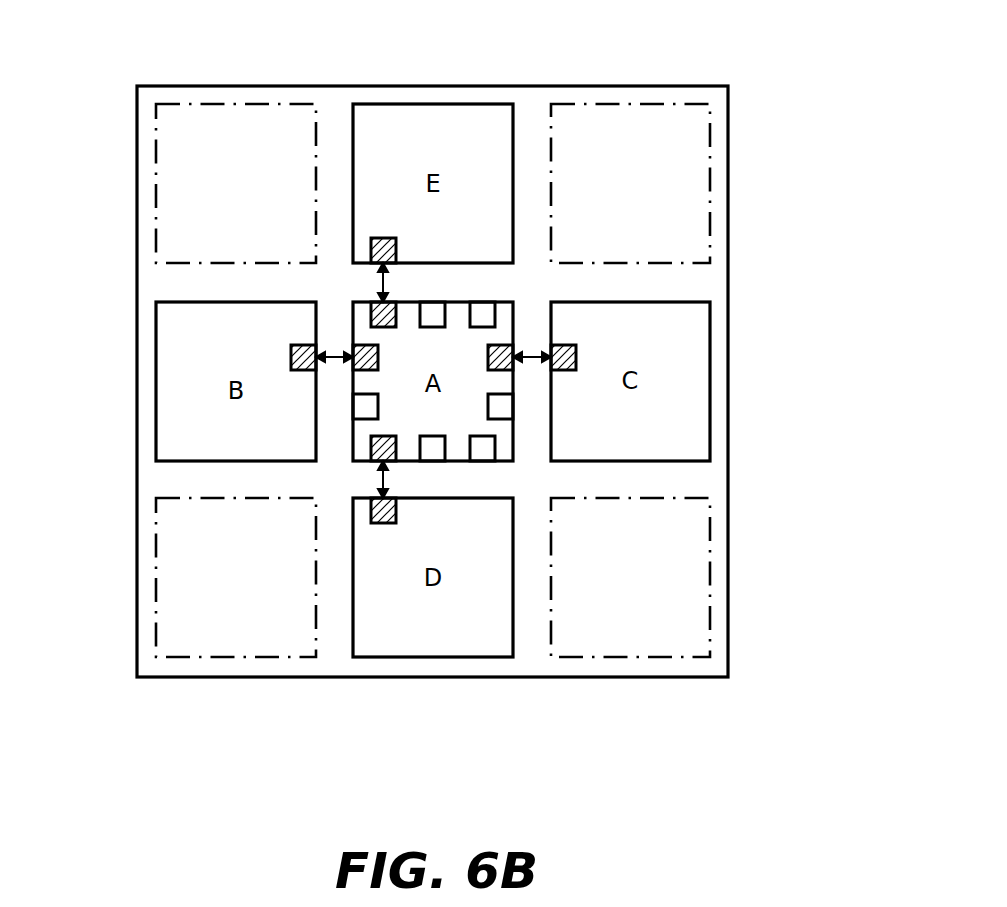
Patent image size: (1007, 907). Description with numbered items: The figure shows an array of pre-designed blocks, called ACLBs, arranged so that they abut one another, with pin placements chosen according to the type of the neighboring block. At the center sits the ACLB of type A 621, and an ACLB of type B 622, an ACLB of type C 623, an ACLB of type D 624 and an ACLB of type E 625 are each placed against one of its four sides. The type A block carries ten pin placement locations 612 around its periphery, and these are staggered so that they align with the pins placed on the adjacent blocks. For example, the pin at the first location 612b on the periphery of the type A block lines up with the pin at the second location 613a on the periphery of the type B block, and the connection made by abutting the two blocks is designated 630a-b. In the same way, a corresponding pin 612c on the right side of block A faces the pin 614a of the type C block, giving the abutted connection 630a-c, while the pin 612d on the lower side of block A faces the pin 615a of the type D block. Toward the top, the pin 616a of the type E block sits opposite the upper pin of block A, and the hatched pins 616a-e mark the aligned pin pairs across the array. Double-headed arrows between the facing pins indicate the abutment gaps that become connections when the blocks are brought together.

The pin placement locations 612 is at (485, 312).
The first location 612b is at (360, 348).
The interconnect pad of die A facing die C 612c is at (505, 368).
The pin 612d is at (370, 457).
The second location 613a is at (290, 354).
The interconnect pad of die C 614a is at (577, 358).
The pin 615a is at (370, 512).
The interconnect pad of die E 616a is at (397, 250).
The aligned interconnect pads 616a-e is at (397, 302).
The ACLB of type A 621 is at (515, 442).
The ACLB of type B 622 is at (173, 461).
The ACLB of type C 623 is at (700, 462).
The ACLB of type D 624 is at (352, 640).
The ACLB of type E 625 is at (392, 105).
The connection 630a-b is at (340, 355).
The gap between die A and die C 630a-c is at (533, 357).